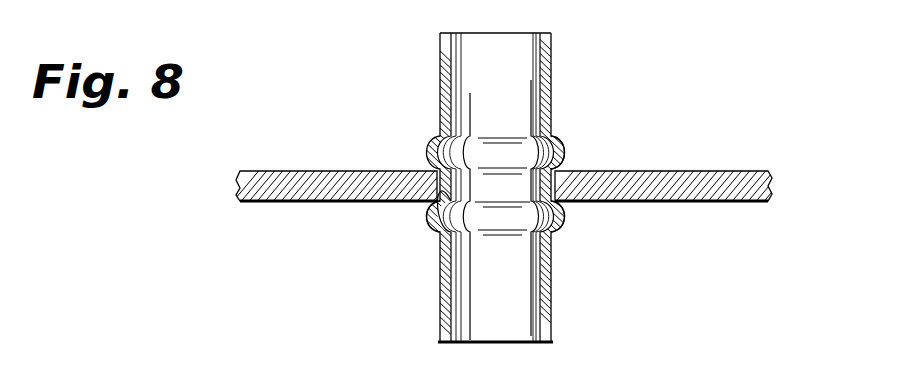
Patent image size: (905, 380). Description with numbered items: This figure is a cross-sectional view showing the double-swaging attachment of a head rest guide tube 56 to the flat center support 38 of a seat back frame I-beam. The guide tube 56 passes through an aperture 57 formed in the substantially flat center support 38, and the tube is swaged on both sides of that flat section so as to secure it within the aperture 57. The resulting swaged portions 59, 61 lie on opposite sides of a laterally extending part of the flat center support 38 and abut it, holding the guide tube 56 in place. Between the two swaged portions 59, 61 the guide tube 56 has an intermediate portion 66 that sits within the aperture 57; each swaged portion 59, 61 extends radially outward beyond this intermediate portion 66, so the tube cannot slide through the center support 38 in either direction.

The flat center support 38 is at (350, 181).
The guide tube 56 is at (440, 82).
The aperture 57 is at (438, 240).
The swaged portion 59 is at (562, 149).
The swaged portion 61 is at (562, 221).
The intermediate portion 66 is at (557, 184).